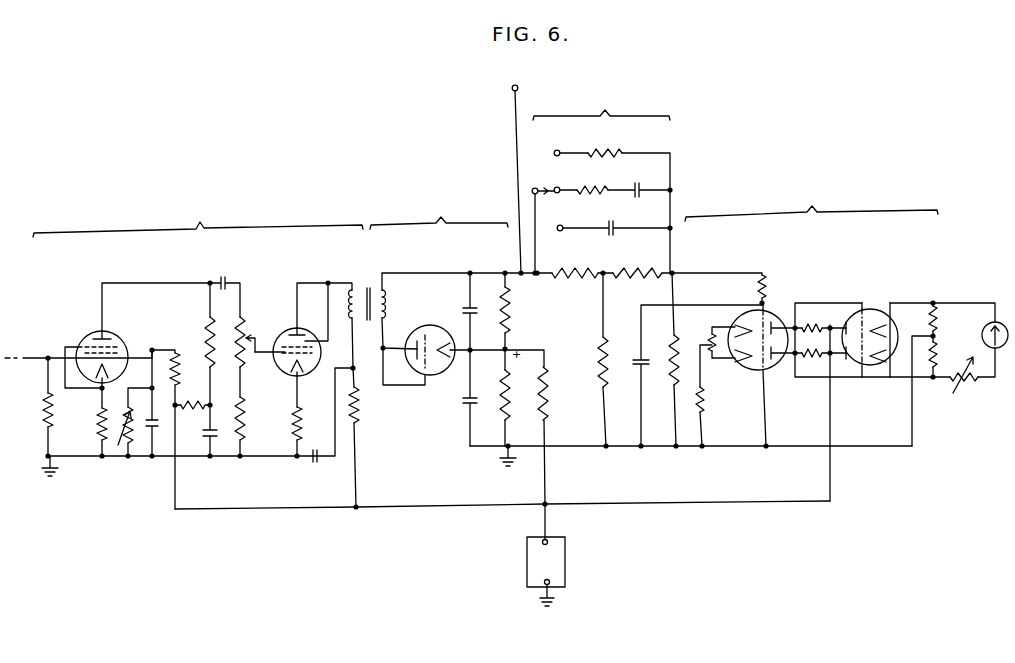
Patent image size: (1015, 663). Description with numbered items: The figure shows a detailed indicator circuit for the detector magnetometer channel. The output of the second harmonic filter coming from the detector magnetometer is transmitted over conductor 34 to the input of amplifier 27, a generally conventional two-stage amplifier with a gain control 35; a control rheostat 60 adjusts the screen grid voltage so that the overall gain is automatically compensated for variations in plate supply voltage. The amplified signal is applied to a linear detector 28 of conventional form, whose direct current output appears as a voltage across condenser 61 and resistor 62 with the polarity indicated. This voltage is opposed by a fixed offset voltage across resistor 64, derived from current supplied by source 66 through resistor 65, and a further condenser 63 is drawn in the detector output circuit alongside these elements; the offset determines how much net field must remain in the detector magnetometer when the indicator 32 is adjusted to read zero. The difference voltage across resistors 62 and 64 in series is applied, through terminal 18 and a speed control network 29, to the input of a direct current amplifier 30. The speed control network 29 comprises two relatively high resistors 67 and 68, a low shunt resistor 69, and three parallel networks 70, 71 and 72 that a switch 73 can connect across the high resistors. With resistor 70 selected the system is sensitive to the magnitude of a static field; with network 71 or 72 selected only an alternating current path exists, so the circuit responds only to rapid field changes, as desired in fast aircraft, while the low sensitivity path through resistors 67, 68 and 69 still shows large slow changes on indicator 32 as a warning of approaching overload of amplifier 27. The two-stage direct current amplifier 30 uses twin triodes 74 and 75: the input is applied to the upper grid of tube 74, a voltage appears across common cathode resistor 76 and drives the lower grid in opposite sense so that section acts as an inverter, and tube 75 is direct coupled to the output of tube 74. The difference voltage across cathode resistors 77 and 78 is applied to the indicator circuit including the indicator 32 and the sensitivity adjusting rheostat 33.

The terminal 18 is at (511, 88).
The amplifier 27 is at (198, 207).
The linear detector 28 is at (439, 201).
The speed control network 29 is at (601, 91).
The direct current amplifier 30 is at (811, 192).
The visual indicator 32 is at (997, 320).
The sensitivity control 33 is at (958, 387).
The conductor 34 is at (30, 356).
The gain control 35 is at (250, 337).
The control rheostat 60 is at (122, 447).
The condenser 61 is at (466, 307).
The resistor 62 is at (511, 316).
The capacitor 63 is at (465, 402).
The resistor 64 is at (500, 412).
The resistor 65 is at (548, 402).
The source 66 is at (565, 561).
The resistor 67 is at (578, 280).
The resistor 68 is at (633, 280).
The shunt resistor 69 is at (600, 361).
The resistor network 70 is at (624, 150).
The network 71 is at (638, 184).
The network 72 is at (612, 223).
The switch 73 is at (540, 189).
The twin triode 74 is at (775, 313).
The twin triode 75 is at (868, 308).
The resistor 76 is at (705, 401).
The cathode resistor 77 is at (938, 309).
The cathode resistor 78 is at (930, 370).